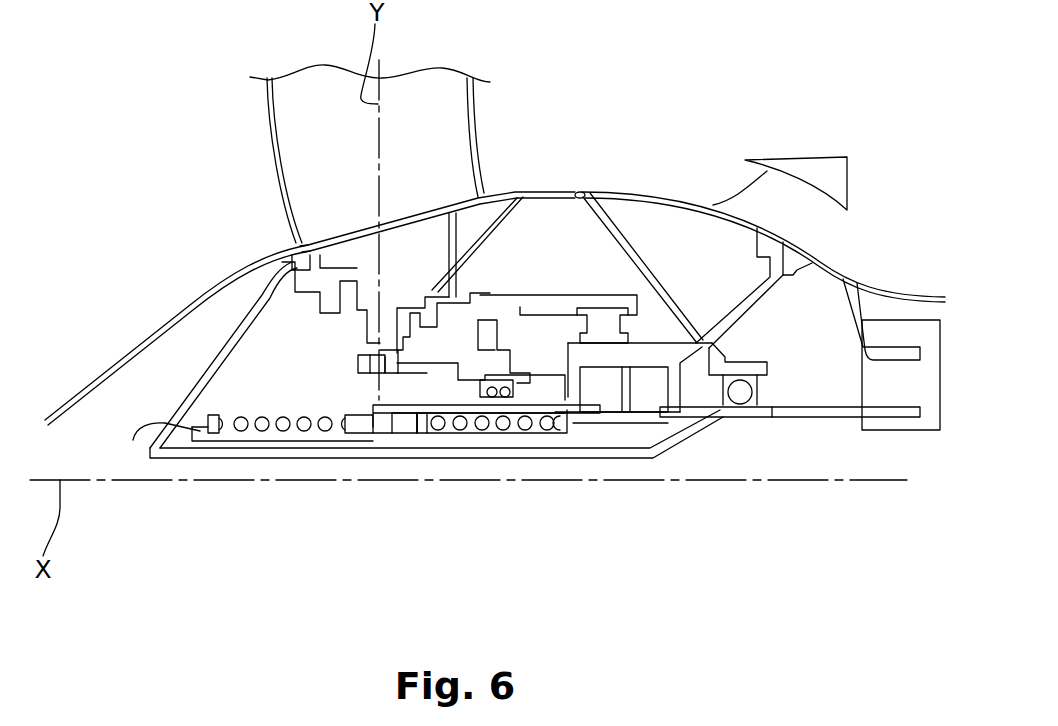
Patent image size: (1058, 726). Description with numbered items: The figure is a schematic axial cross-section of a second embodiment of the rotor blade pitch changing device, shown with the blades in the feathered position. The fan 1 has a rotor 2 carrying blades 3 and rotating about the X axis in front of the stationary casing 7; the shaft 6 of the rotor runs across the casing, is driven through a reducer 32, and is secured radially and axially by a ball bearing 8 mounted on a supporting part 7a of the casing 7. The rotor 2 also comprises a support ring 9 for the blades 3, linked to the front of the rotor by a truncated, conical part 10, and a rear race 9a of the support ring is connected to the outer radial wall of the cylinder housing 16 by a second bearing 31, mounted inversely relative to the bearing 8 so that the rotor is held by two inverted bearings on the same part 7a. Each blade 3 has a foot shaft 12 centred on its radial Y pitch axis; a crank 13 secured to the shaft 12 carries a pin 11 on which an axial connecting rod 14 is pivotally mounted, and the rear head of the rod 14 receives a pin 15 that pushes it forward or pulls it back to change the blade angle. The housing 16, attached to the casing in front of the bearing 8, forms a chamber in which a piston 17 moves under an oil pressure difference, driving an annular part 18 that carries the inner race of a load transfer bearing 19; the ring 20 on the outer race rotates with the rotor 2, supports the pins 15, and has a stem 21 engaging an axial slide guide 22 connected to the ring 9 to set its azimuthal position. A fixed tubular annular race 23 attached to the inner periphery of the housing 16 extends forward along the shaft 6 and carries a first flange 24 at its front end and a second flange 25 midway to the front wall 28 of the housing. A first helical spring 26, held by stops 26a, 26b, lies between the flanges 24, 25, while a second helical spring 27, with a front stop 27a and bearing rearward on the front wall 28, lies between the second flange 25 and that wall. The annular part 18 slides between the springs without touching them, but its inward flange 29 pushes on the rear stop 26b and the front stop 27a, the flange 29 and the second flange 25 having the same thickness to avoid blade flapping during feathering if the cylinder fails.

The fan 1 is at (148, 222).
The rotor 2 is at (81, 342).
The blades 3 is at (300, 143).
The shaft 6 is at (300, 455).
The stationary casing 7 is at (846, 250).
The supporting part 7a is at (745, 302).
The bearing 8 is at (749, 392).
The support ring 9 is at (344, 240).
The rear race 9a is at (582, 191).
The truncated part 10 is at (243, 352).
The pin 11 is at (370, 388).
The blade foot shaft 12 is at (363, 337).
The crank 13 is at (363, 350).
The connecting rod 14 is at (430, 364).
The pin 15 is at (470, 368).
The housing 16 is at (673, 413).
The piston 17 is at (625, 385).
The annular part 18 is at (445, 432).
The load transfer bearing 19 is at (577, 397).
The ring 20 is at (520, 393).
The stem 21 is at (487, 322).
The axial slide guide 22 is at (512, 322).
The fixed annular race 23 is at (400, 434).
The first flange 24 is at (133, 440).
The second flange 25 is at (385, 433).
The first helical spring 26 is at (262, 431).
The stop 26a is at (214, 434).
The stop 26b is at (357, 433).
The second helical spring 27 is at (481, 431).
The stop 27a is at (404, 436).
The front wall 28 is at (573, 419).
The flange 29 is at (368, 410).
The bearing 31 is at (604, 310).
The reducer 32 is at (885, 416).